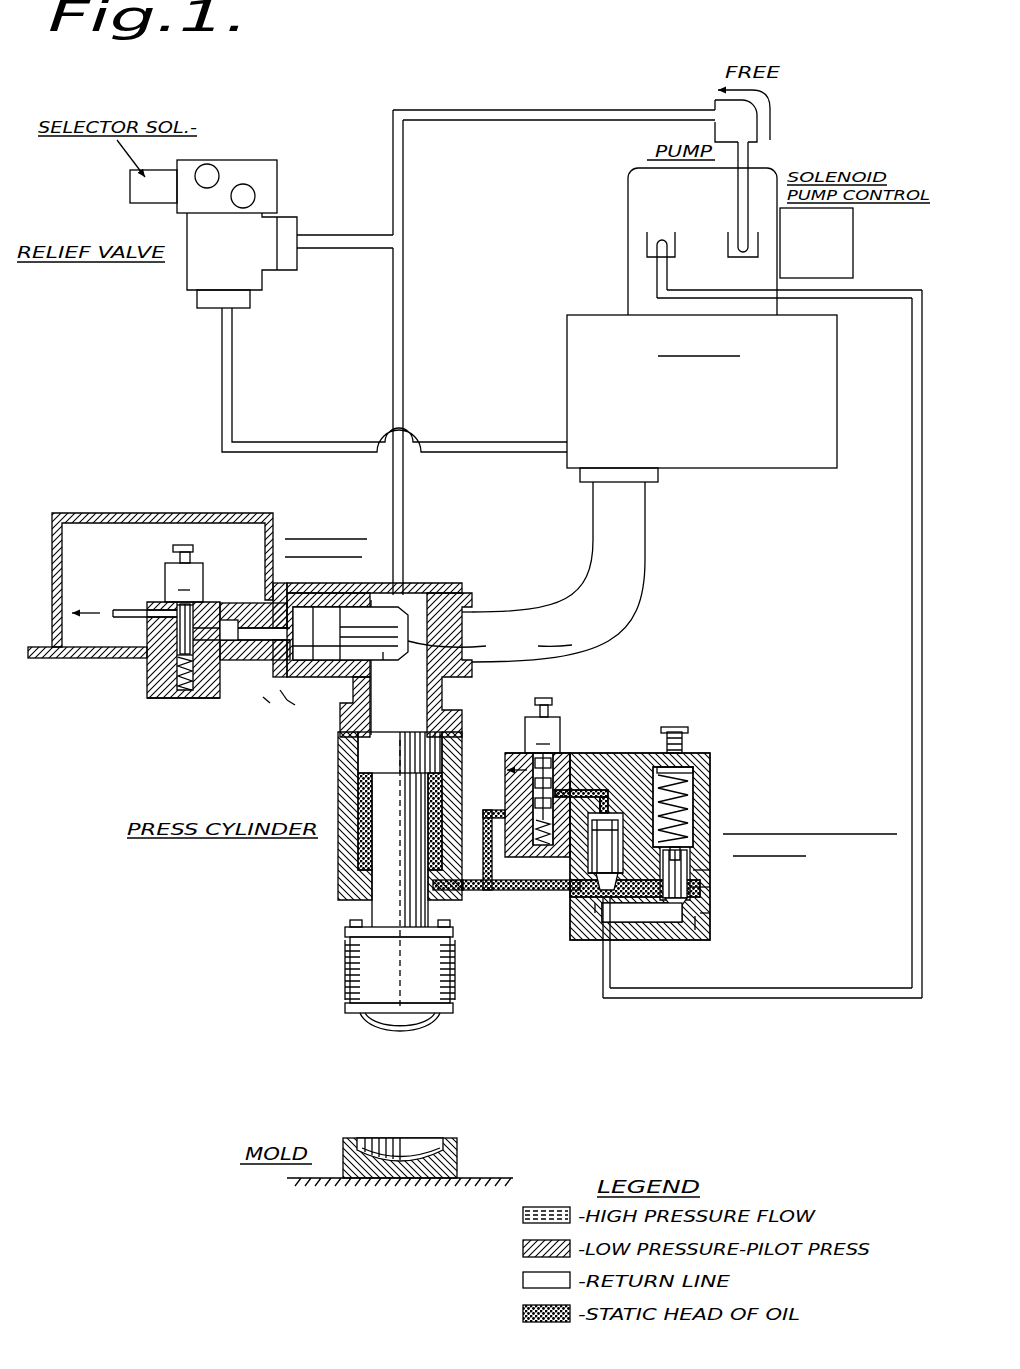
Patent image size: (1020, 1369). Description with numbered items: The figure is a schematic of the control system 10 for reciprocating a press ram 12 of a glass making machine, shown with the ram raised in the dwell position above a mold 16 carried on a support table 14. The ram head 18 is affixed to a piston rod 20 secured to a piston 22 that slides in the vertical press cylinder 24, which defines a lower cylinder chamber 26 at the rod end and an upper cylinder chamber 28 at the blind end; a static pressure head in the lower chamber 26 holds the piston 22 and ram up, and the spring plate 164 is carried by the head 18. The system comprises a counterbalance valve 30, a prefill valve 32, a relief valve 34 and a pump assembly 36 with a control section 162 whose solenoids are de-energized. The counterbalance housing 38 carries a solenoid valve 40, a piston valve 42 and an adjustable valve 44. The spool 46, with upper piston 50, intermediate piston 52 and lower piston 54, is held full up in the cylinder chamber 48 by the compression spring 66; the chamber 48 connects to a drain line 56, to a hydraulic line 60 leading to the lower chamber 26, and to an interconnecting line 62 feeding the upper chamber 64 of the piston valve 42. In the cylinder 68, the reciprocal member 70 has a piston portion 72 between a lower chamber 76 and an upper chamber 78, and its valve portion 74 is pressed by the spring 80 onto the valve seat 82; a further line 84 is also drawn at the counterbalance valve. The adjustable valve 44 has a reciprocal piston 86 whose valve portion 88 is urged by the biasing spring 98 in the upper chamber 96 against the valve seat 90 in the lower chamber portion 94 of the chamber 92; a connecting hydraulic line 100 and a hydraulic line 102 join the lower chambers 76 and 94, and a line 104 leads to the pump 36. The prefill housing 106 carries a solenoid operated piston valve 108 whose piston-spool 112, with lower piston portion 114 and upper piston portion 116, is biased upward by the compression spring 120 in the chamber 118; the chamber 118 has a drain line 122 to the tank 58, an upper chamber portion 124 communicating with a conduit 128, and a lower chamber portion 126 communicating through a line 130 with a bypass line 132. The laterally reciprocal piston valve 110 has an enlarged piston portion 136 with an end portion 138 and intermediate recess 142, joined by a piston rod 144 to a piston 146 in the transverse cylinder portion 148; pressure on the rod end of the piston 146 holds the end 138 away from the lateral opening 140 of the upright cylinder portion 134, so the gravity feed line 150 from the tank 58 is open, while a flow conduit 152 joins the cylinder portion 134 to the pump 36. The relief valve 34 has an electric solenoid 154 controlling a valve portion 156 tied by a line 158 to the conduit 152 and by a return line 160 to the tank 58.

The control system 10 is at (263, 697).
The press ram 12 is at (437, 911).
The support table 14 is at (484, 1170).
The mold 16 is at (466, 1140).
The ram head 18 is at (383, 958).
The piston rod 20 is at (350, 916).
The piston 22 is at (372, 753).
The press cylinder 24 is at (333, 851).
The lower cylinder chamber 26 is at (340, 871).
The upper cylinder chamber 28 is at (414, 726).
The counterbalance valve 30 is at (711, 803).
The prefill valve 32 is at (378, 580).
The relief valve 34 is at (191, 297).
The hydraulic pump assembly 36 is at (625, 254).
The housing 38 is at (600, 751).
The solenoid operated valve 40 is at (567, 752).
The pressure sensitive piston valve 42 is at (641, 752).
The spring biased adjustable valve 44 is at (711, 816).
The spool 46 is at (530, 776).
The cylinder chamber 48 is at (578, 752).
The upper piston 50 is at (524, 754).
The intermediate piston 52 is at (608, 752).
The lower piston 54 is at (535, 837).
The drain line 56 is at (440, 787).
The hydraulic fluid tank 58 is at (758, 462).
The hydraulic line 60 is at (450, 931).
The interconnecting line 62 is at (603, 800).
The upper chamber 64 is at (572, 752).
The compression spring 66 is at (535, 841).
The cylinder 68 is at (711, 888).
The reciprocal member 70 is at (598, 846).
The piston portion 72 is at (601, 898).
The valve portion 74 is at (601, 906).
The lower chamber 76 is at (612, 941).
The upper chamber 78 is at (560, 844).
The spring 80 is at (688, 752).
The valve seat 82 is at (595, 906).
The conduit 84 is at (520, 892).
The reciprocal piston 86 is at (713, 874).
The valve portion 88 is at (708, 914).
The valve seat 90 is at (690, 926).
The chamber 92 is at (712, 862).
The lower chamber portion 94 is at (711, 917).
The upper chamber 96 is at (700, 770).
The biasing spring 98 is at (708, 762).
The connecting hydraulic line 100 is at (628, 992).
The hydraulic line 102 is at (648, 913).
The line 104 is at (912, 518).
The housing 106 is at (440, 581).
The solenoid operated piston valve 108 is at (212, 585).
The laterally reciprocal piston valve 110 is at (375, 620).
The piston-spool 112 is at (204, 672).
The lower piston portion 114 is at (172, 681).
The upper piston portion 116 is at (276, 540).
The chamber 118 is at (157, 655).
The compression spring 120 is at (152, 684).
The drain line 122 is at (130, 610).
The upper chamber portion 124 is at (180, 605).
The lower chamber portion 126 is at (186, 697).
The conduit 128 is at (213, 638).
The line 130 is at (72, 658).
The bypass line 132 is at (82, 512).
The upright cylinder portion 134 is at (371, 716).
The enlarged piston portion 136 is at (384, 653).
The end portion 138 is at (490, 643).
The lateral opening 140 is at (427, 613).
The intermediate recess 142 is at (279, 707).
The piston rod 144 is at (260, 702).
The piston 146 is at (230, 620).
The transverse cylinder portion 148 is at (282, 584).
The gravity feed line 150 is at (623, 568).
The flow conduit 152 is at (405, 353).
The electric solenoid 154 is at (203, 159).
The valve portion 156 is at (263, 236).
The line 158 is at (335, 258).
The return line 160 is at (310, 408).
The pump control section 162 is at (855, 248).
The spring plate 164 is at (341, 1011).